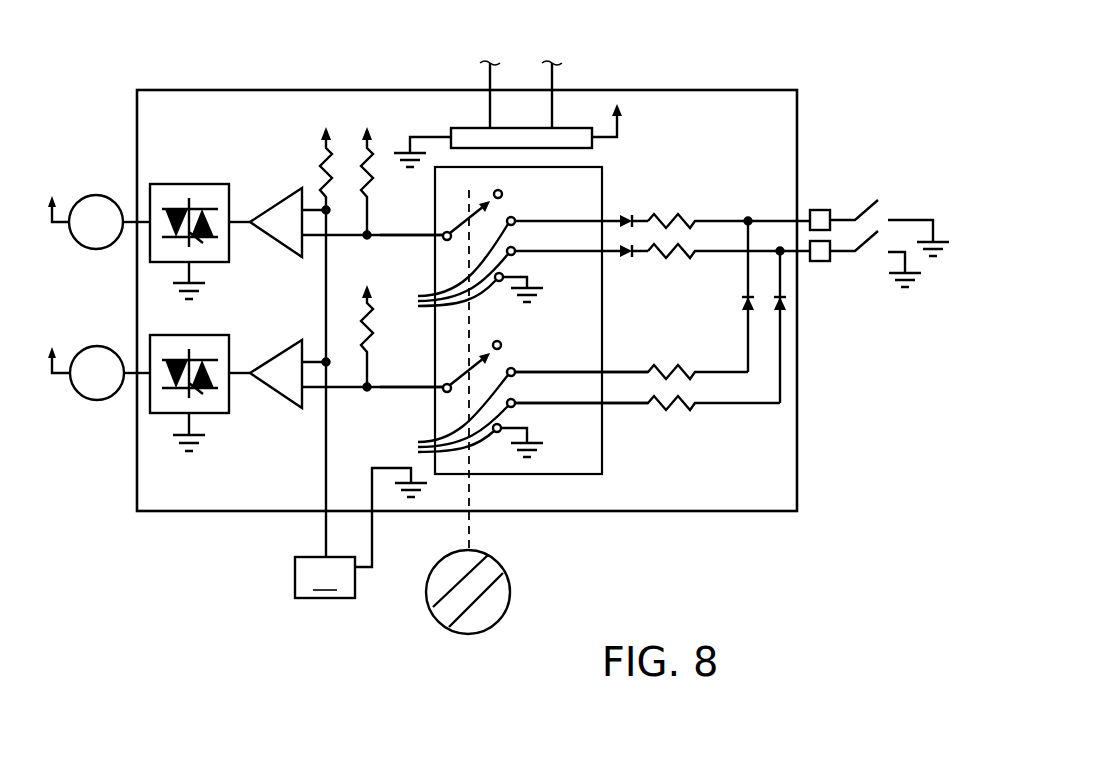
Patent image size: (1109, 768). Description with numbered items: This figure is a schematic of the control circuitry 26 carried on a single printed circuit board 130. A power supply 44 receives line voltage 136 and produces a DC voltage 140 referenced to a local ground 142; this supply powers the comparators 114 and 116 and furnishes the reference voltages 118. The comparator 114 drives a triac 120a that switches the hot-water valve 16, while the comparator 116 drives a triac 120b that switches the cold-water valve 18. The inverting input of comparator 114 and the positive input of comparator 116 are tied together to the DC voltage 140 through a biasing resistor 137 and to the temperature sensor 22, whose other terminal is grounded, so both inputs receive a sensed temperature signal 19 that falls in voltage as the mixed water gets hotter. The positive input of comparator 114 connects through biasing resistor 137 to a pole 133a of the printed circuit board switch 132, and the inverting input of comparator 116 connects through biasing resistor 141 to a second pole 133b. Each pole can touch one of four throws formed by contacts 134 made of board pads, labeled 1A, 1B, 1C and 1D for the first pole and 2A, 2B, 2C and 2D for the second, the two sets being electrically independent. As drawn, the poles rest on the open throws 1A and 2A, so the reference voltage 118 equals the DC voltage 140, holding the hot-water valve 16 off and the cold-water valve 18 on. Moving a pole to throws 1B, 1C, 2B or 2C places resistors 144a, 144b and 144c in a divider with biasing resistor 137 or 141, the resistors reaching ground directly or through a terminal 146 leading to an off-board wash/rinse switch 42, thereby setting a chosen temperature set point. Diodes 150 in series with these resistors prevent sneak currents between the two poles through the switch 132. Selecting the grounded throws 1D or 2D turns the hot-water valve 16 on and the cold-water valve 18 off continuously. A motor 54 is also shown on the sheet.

The control system 26 is at (700, 62).
The hot-water valve 16 is at (99, 195).
The cold-water valve 18 is at (100, 346).
The sensed temperature signal 19 is at (325, 534).
The temperature sensor 22 is at (361, 533).
The wash/rinse switch 42 is at (903, 192).
The power supply 44 is at (575, 128).
The motor 54 is at (511, 592).
The comparator 114 is at (280, 203).
The comparator 116 is at (270, 393).
The reference voltage 118 is at (387, 240).
The triac 120a is at (197, 184).
The triac 120b is at (160, 413).
The printed circuit board 130 is at (218, 90).
The printed circuit board switch 132 is at (333, 122).
The pole 133a is at (444, 240).
The second pole 133b is at (447, 393).
The contacts 134 is at (442, 341).
The line voltage 136 is at (548, 78).
The biasing resistor 137 is at (372, 182).
The DC voltage 140 is at (622, 108).
The biasing resistor 141 is at (358, 322).
The local ground 142 is at (418, 133).
The resistor 144a is at (672, 212).
The resistor 144b is at (670, 262).
The resistor 144c is at (685, 368).
The terminal 146 is at (840, 245).
The diodes 150 is at (740, 318).
The throw 1A is at (515, 188).
The throw 1B is at (563, 213).
The throw 1C is at (563, 243).
The throw 1D is at (528, 280).
The throw 2A is at (514, 338).
The throw 2B is at (577, 363).
The throw 2C is at (577, 394).
The throw 2D is at (527, 435).